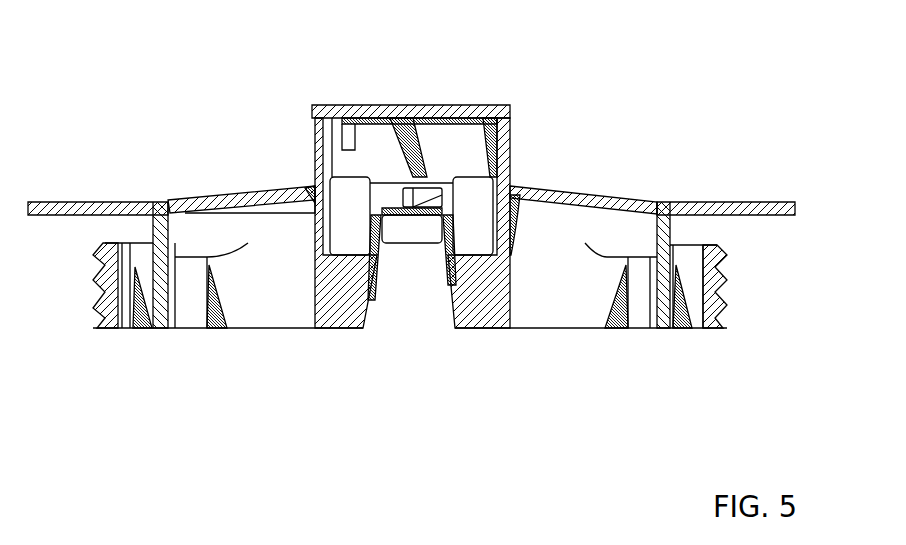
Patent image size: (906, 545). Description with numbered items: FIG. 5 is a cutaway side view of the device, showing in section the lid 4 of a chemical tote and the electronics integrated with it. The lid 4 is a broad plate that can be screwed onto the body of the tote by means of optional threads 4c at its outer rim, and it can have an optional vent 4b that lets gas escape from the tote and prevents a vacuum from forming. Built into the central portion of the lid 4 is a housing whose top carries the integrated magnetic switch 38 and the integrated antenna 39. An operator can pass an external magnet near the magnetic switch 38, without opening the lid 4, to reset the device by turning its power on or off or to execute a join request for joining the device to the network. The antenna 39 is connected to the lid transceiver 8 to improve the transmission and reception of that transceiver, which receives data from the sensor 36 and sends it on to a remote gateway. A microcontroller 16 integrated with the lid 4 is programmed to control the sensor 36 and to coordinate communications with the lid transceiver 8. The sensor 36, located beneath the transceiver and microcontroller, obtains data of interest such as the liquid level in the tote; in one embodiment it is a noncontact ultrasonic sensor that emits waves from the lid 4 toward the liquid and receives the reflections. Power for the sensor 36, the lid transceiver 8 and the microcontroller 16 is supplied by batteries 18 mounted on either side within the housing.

The lid 4 is at (57, 202).
The vent 4b is at (138, 333).
The threads 4c is at (738, 243).
The lid transceiver 8 is at (358, 155).
The microcontroller 16 is at (341, 138).
The battery 18 is at (358, 224).
The sensor 36 is at (410, 245).
The integrated magnetic switch 38 is at (418, 105).
The integrated antenna 39 is at (483, 105).